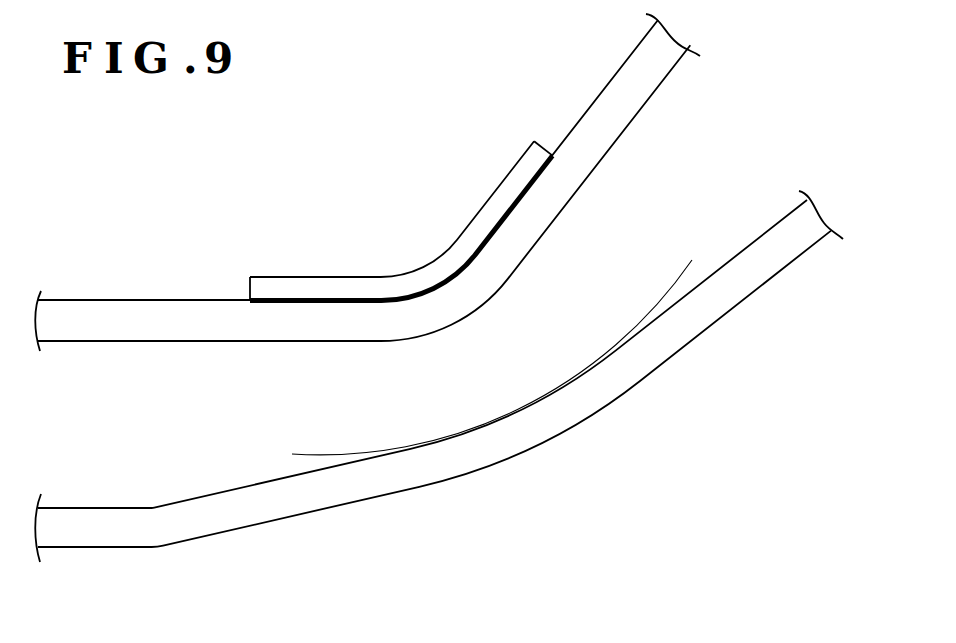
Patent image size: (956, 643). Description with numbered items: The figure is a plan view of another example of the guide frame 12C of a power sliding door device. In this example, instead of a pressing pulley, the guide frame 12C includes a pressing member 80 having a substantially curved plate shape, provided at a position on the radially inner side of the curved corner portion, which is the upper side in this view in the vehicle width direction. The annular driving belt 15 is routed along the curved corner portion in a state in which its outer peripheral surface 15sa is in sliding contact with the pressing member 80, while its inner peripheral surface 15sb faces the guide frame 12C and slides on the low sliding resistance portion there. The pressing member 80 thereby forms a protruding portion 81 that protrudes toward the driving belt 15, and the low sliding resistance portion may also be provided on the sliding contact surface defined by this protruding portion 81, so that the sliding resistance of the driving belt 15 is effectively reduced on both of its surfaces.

The outer peripheral surface 15sa is at (137, 300).
The pressing member 80 is at (263, 277).
The protruding portion 81 is at (442, 283).
The guide frame 12C is at (485, 424).
The driving belt 15 is at (660, 374).
The inner peripheral surface 15sb is at (227, 492).